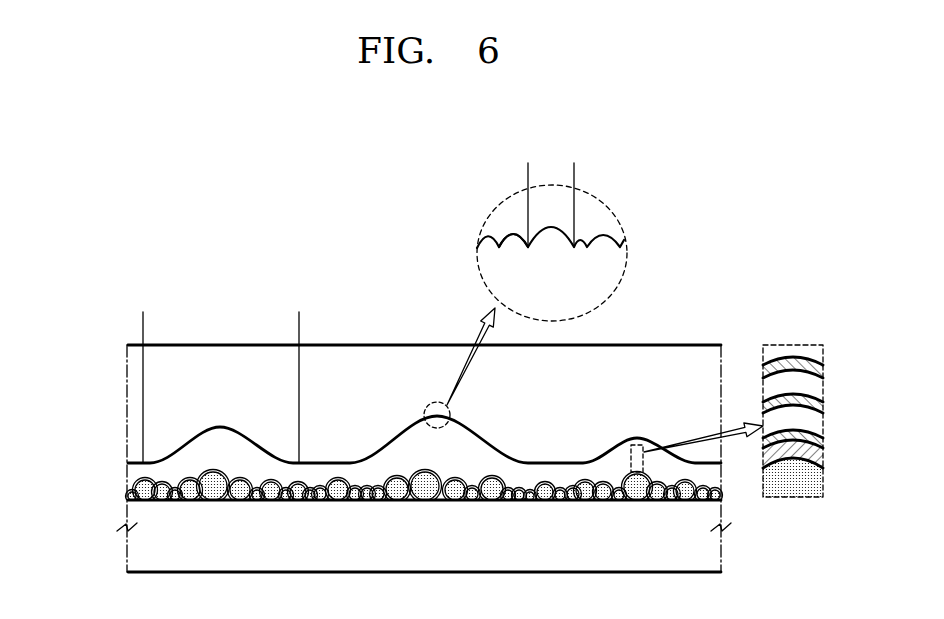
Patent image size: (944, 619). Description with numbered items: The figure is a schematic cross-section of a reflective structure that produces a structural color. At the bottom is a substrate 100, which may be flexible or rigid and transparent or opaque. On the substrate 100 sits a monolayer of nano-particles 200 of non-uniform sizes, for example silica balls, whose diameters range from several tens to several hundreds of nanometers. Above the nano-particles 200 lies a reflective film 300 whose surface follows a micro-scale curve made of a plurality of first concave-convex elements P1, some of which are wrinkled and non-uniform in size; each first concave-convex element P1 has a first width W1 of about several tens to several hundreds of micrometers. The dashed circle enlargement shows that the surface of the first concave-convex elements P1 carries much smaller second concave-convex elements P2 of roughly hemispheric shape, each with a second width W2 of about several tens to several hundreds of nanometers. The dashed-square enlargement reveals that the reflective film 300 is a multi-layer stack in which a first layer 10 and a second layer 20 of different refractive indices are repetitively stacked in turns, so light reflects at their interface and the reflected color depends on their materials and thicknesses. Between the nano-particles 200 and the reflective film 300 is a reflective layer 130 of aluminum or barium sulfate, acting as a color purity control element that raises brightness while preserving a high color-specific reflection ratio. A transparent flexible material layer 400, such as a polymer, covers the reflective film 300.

The substrate 100 is at (127, 555).
The nano-particles 200 is at (118, 495).
The reflective film 300 is at (127, 468).
The transparent flexible material layer 400 is at (127, 388).
The reflective layer 130 is at (822, 458).
The first layer 10 is at (822, 443).
The second layer 20 is at (820, 422).
The first concave-convex elements P1 is at (378, 407).
The second concave-convex elements P2 is at (512, 214).
The first width W1 is at (290, 317).
The second width W2 is at (566, 169).